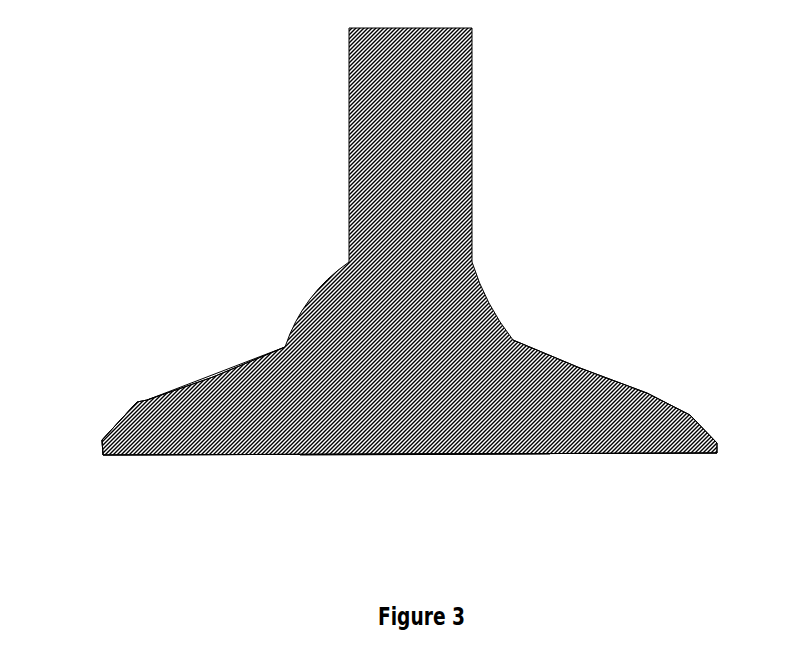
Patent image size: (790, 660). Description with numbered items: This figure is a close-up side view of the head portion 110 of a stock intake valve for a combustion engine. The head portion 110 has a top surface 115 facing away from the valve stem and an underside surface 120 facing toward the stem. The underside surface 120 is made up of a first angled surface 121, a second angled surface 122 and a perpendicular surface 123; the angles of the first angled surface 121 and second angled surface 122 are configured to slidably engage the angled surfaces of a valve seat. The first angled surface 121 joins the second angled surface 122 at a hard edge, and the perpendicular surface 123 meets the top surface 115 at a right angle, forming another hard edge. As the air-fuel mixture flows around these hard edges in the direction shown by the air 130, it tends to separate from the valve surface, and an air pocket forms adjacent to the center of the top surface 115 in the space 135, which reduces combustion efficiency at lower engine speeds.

The head portion 110 is at (523, 235).
The top surface 115 is at (270, 458).
The underside surface 120 is at (32, 395).
The first angled surface 121 is at (293, 318).
The second angled surface 122 is at (128, 393).
The perpendicular surface 123 is at (92, 433).
The air 130 is at (712, 532).
The space 135 is at (442, 511).